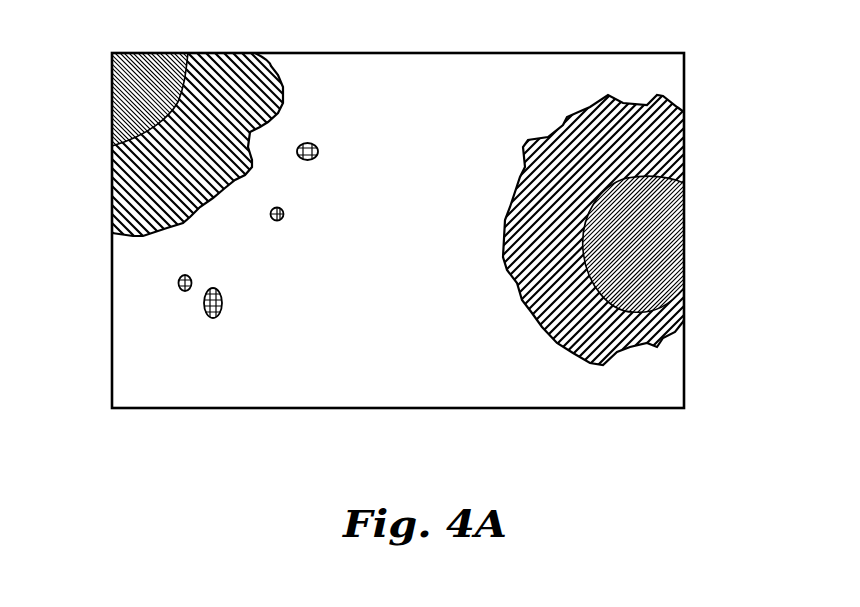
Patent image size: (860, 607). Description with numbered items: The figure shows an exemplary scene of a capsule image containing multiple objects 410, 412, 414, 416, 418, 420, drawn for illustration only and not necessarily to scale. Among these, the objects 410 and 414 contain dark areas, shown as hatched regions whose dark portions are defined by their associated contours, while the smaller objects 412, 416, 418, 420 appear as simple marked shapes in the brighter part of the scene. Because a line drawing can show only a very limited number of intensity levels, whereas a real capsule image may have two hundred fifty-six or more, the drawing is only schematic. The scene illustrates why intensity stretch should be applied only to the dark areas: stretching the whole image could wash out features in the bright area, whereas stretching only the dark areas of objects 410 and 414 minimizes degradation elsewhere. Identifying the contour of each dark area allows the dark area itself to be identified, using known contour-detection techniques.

The object 410 is at (250, 92).
The object 412 is at (314, 147).
The object 414 is at (633, 141).
The object 416 is at (178, 286).
The object 418 is at (218, 318).
The object 420 is at (278, 222).